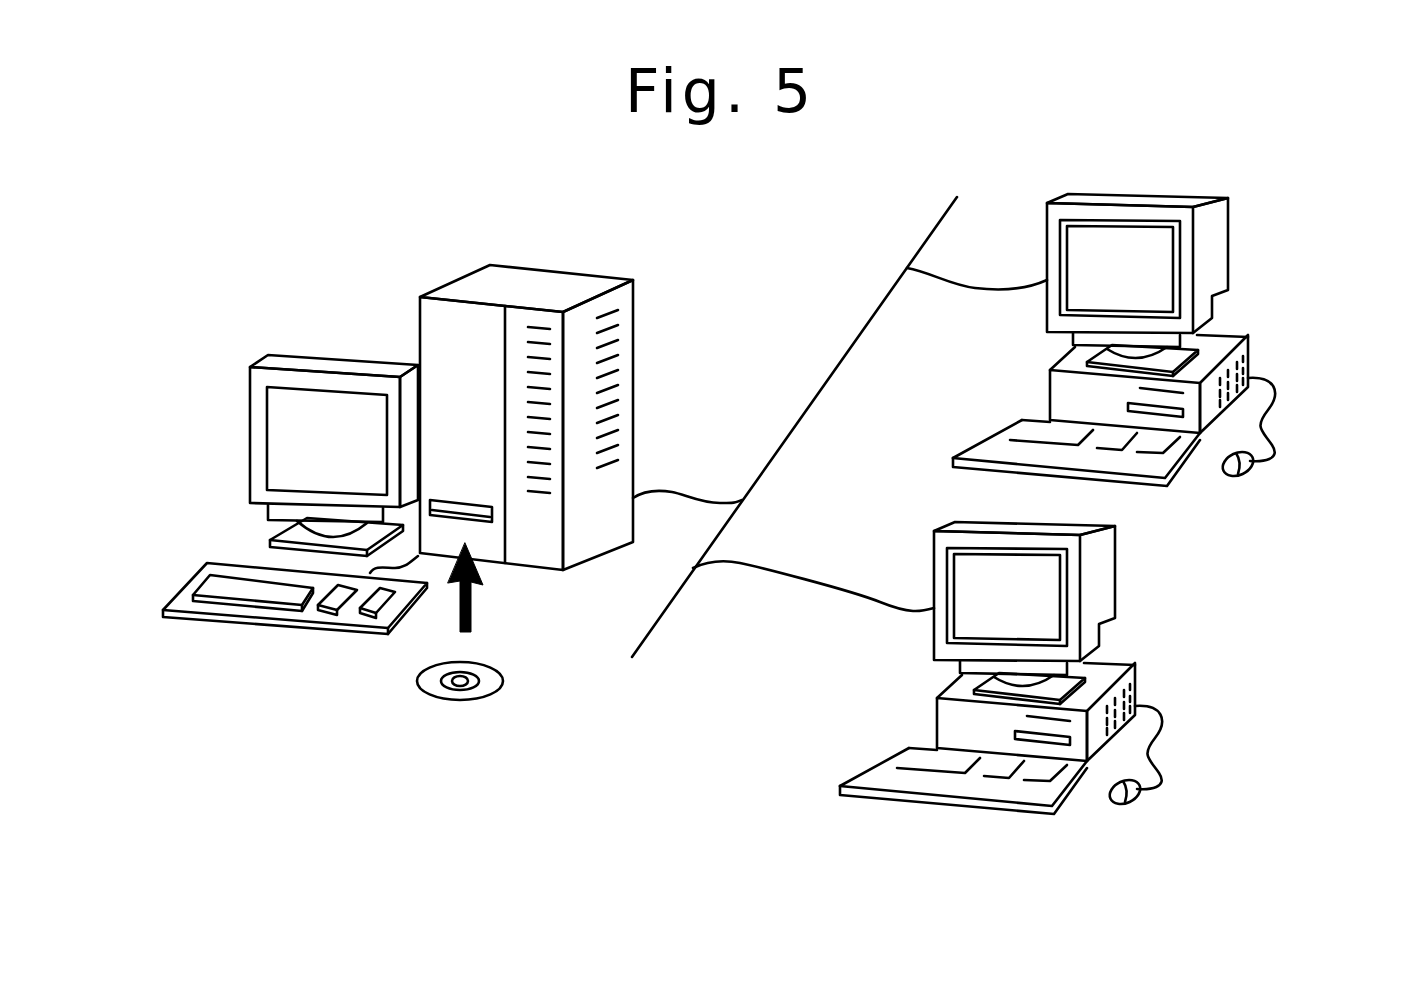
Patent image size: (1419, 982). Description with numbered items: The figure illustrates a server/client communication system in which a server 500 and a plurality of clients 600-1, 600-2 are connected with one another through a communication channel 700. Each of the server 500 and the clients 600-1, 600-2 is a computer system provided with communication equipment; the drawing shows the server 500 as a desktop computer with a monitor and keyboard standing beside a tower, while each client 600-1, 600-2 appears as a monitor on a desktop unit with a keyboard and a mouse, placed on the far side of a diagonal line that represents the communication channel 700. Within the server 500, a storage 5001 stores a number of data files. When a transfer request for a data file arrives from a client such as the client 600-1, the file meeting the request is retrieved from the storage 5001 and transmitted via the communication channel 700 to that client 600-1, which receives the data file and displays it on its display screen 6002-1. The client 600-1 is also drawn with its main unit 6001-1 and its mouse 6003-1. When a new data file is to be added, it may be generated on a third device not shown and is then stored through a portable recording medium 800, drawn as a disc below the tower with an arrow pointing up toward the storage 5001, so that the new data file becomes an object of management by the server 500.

The server 500 is at (386, 438).
The storage 5001 is at (428, 340).
The communication channel 700 is at (830, 372).
The portable recording medium 800 is at (467, 701).
The client 600-1 is at (1092, 670).
The client 600-2 is at (1413, 232).
The main body of client terminal 6001-1 is at (1131, 695).
The display screen 6002-1 is at (1123, 602).
The mouse of client terminal 6003-1 is at (1200, 773).